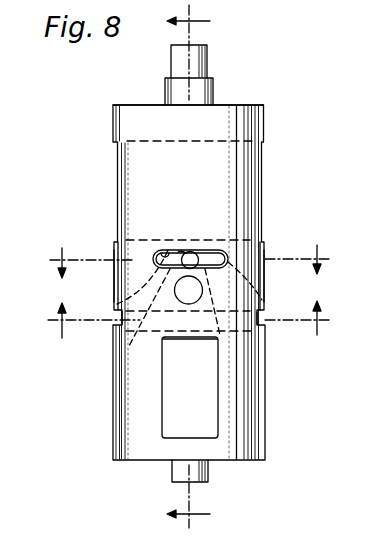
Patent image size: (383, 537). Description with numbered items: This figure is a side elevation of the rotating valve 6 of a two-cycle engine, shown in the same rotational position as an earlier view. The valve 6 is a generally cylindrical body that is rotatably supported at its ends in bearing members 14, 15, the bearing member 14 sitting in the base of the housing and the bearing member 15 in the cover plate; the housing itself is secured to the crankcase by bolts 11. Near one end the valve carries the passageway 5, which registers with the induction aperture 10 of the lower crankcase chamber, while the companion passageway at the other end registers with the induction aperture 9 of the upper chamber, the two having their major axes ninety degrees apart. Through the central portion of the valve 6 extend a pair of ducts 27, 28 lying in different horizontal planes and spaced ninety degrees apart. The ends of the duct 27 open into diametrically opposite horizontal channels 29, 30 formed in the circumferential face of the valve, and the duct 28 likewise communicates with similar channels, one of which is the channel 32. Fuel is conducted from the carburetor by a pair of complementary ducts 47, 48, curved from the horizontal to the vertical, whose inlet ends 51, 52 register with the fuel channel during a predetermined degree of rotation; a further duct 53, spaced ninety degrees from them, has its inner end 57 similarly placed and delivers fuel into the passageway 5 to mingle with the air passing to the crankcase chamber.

The passageway 5 is at (163, 386).
The rotating valve 6 is at (266, 128).
The induction aperture 9 is at (197, 266).
The induction aperture 10 is at (192, 257).
The bolts 11 is at (140, 143).
The bearing member 14 is at (206, 64).
The bearing member 15 is at (210, 472).
The duct 27 is at (197, 251).
The duct 28 is at (165, 315).
The channel 29 is at (118, 321).
The channel 30 is at (264, 326).
The channel 32 is at (171, 239).
The duct 47 is at (145, 265).
The duct 48 is at (239, 268).
The inlet end 51 is at (117, 290).
The inlet end 52 is at (263, 292).
The duct 53 is at (163, 314).
The inner end 57 is at (201, 286).